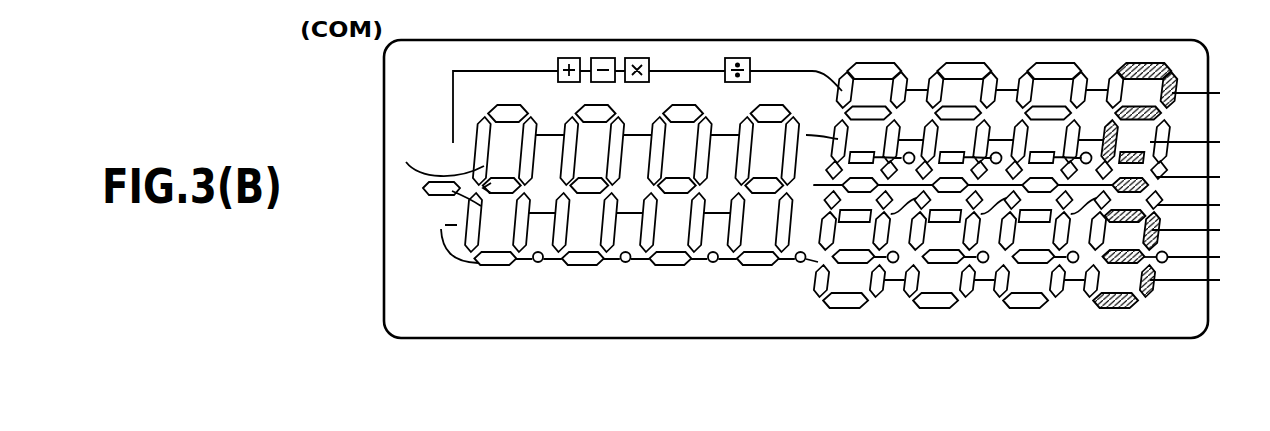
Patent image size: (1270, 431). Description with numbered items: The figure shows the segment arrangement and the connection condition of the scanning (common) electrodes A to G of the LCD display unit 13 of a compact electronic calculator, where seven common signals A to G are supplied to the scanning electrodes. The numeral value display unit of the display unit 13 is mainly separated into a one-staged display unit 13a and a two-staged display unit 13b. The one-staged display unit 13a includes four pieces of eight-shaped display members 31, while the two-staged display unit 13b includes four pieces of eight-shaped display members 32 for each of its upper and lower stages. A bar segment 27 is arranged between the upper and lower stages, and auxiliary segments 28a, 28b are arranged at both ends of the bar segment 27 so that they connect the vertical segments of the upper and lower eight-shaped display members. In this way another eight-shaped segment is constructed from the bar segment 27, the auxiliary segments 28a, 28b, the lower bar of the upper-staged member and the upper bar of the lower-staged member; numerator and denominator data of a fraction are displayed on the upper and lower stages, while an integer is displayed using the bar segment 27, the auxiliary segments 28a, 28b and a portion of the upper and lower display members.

The LCD display unit 13 is at (406, 269).
The one-staged display unit 13a is at (624, 233).
The two-staged display unit 13b is at (1027, 204).
The 8-shaped display member 31 is at (514, 210).
The bar segment 27 is at (858, 183).
The 8-shaped display member 32 is at (1092, 60).
The auxiliary segment 28a is at (1004, 82).
The auxiliary segment 28b is at (1011, 196).